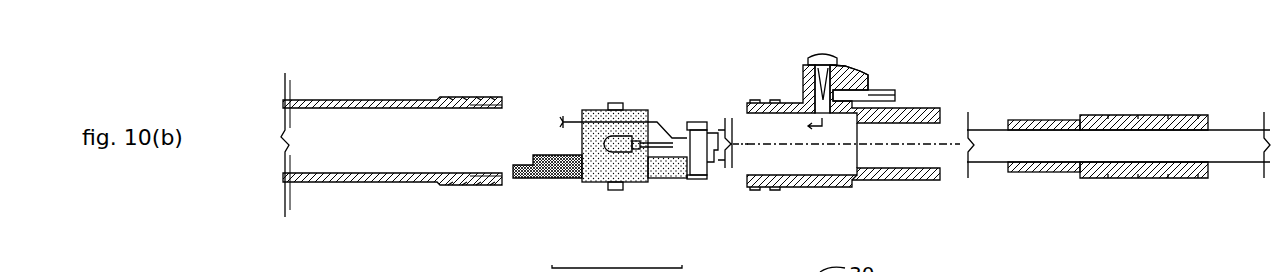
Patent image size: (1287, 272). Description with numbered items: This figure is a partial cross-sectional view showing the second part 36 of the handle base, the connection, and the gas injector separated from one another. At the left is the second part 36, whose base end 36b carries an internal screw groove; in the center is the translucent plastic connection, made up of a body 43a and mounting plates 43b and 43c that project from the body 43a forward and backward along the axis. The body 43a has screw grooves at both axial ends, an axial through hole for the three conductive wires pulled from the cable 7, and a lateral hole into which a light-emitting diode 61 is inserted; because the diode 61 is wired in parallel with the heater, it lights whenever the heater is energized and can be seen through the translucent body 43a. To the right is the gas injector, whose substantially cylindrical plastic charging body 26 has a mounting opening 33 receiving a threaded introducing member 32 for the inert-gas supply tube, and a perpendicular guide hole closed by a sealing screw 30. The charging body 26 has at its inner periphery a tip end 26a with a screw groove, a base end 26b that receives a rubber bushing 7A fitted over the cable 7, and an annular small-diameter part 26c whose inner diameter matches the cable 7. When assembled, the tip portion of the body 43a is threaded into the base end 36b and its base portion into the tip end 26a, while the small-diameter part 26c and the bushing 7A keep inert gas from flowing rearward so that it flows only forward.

The second part of the handle base 36 is at (387, 100).
The base end of the second part 36b is at (473, 97).
The body of the connection 43a is at (617, 190).
The mounting plate 43b is at (563, 180).
The mounting plate 43c is at (675, 178).
The light-emitting diode 61 is at (617, 143).
The cable 7 is at (714, 142).
The rubber bushing 7A is at (1122, 117).
The charging body 26 is at (812, 187).
The tip end of the charging body 26a is at (760, 101).
The base end of the charging body 26b is at (917, 108).
The annular small-diameter part 26c is at (852, 180).
The sealing screw 30 is at (822, 56).
The mounting opening 33 is at (840, 88).
The introducing member 32 is at (883, 92).